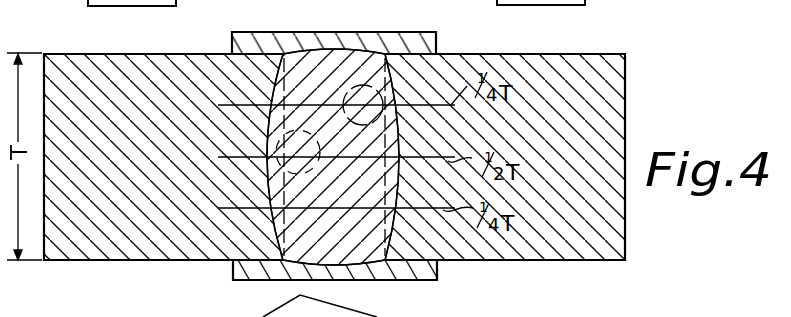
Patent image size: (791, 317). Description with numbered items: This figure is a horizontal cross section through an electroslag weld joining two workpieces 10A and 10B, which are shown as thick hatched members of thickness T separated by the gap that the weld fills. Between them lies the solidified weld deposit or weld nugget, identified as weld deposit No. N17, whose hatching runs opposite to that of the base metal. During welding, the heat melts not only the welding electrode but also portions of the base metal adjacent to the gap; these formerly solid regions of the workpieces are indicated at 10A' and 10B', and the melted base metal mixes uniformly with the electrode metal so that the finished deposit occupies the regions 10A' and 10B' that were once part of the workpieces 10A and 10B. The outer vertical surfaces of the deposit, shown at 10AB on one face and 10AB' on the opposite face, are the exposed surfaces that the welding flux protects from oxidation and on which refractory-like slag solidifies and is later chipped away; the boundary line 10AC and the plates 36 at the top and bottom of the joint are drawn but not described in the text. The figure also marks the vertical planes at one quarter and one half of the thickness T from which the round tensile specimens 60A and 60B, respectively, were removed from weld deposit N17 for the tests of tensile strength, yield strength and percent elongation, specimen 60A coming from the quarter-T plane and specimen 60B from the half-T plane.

The workpiece 10A is at (163, 157).
The workpiece 10B is at (505, 157).
The backing/restraint bar 36 is at (279, 32).
The weld deposit No. N-17 N17 is at (297, 229).
The fusion line / heat affected zone boundary 10AC is at (296, 190).
The melted region of workpiece 10A 10A' is at (241, 157).
The melted region of workpiece 10B 10B' is at (426, 157).
The exposed vertical surface of the weld deposit 10AB is at (341, 27).
The exposed vertical surface of the weld deposit 10AB' is at (381, 285).
The round tensile specimen 60A is at (383, 99).
The round tensile specimen 60B is at (316, 170).